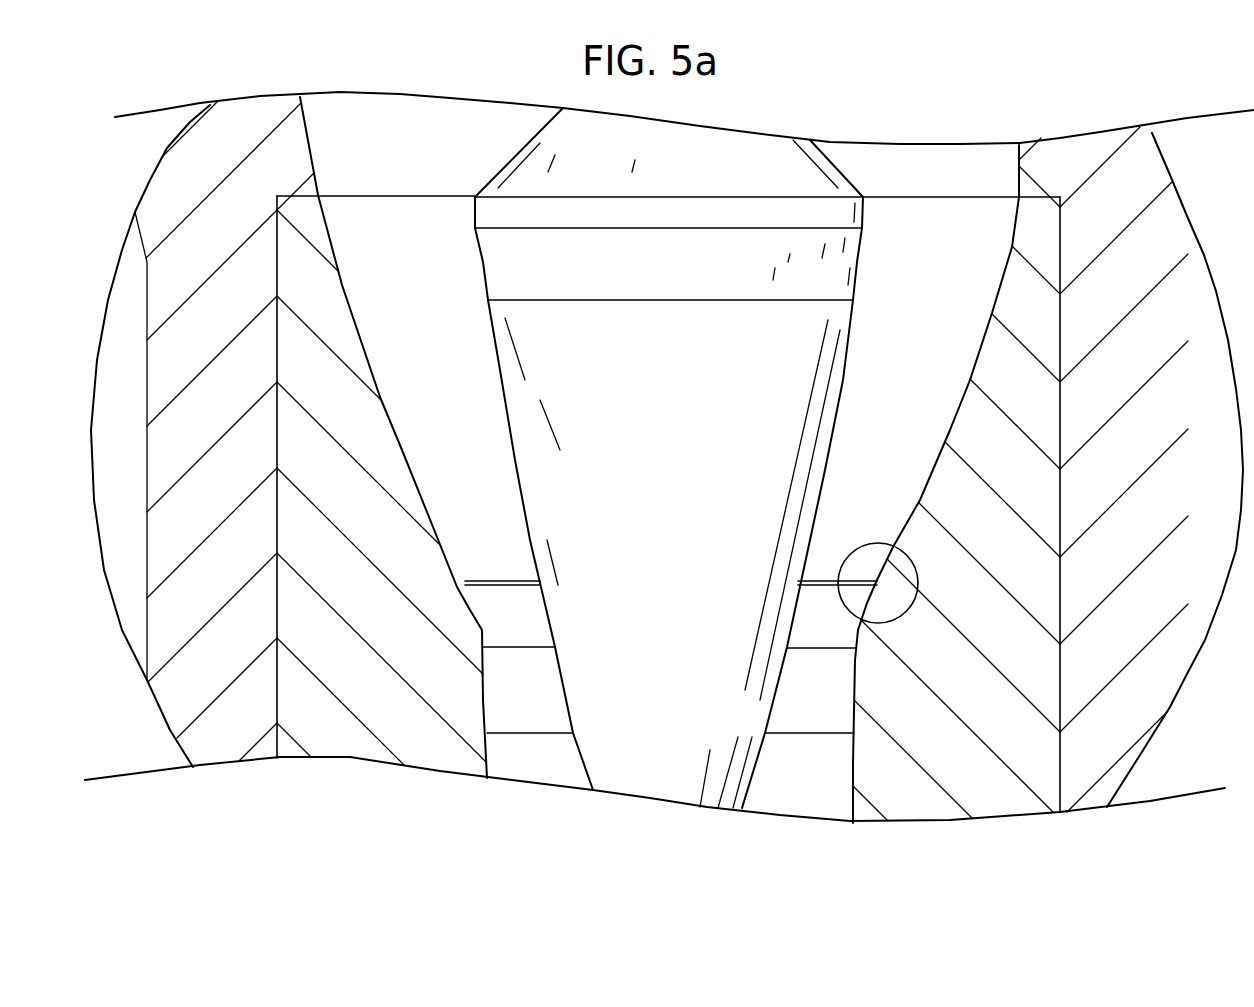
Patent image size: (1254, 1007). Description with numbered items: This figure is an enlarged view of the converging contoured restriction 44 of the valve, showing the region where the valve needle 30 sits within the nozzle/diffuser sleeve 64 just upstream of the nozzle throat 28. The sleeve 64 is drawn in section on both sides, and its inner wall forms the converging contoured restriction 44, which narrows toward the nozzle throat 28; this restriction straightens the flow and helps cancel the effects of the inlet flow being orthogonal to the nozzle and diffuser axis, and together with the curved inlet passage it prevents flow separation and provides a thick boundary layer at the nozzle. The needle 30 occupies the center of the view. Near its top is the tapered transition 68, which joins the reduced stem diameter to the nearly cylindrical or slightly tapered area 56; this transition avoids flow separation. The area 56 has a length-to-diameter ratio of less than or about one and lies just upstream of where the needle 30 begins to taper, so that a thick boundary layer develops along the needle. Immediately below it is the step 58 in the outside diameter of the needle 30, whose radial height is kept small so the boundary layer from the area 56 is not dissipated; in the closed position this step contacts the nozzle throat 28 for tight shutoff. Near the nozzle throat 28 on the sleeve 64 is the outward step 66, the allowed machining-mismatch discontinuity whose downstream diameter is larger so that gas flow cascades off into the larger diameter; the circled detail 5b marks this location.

The nozzle throat 28 is at (508, 615).
The valve needle 30 is at (671, 661).
The converging contoured restriction 44 is at (405, 432).
The nearly cylindrical or slightly tapered area 56 is at (458, 213).
The step 58 is at (461, 266).
The nozzle/diffuser sleeve 64 is at (371, 601).
The outward step 66 is at (866, 575).
The tapered transition 68 is at (500, 153).
The detail circle 5b is at (877, 543).